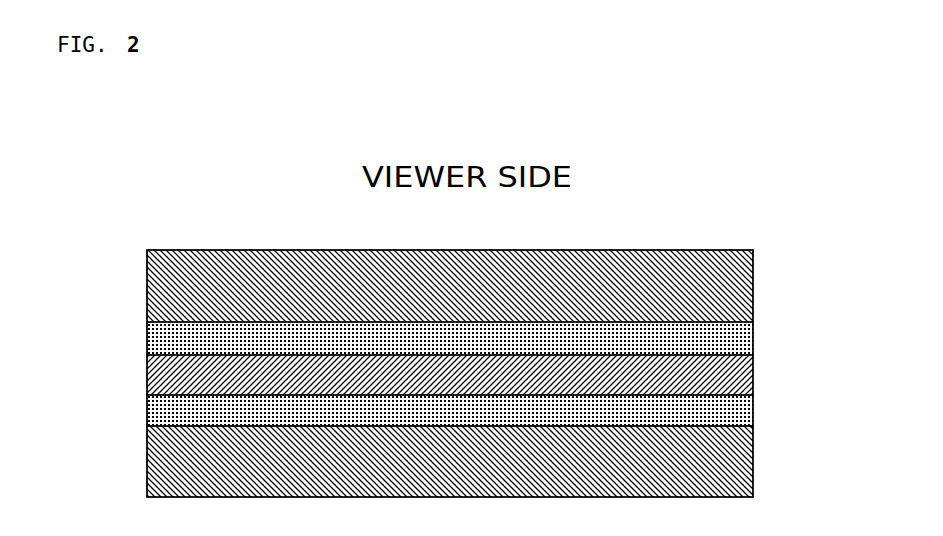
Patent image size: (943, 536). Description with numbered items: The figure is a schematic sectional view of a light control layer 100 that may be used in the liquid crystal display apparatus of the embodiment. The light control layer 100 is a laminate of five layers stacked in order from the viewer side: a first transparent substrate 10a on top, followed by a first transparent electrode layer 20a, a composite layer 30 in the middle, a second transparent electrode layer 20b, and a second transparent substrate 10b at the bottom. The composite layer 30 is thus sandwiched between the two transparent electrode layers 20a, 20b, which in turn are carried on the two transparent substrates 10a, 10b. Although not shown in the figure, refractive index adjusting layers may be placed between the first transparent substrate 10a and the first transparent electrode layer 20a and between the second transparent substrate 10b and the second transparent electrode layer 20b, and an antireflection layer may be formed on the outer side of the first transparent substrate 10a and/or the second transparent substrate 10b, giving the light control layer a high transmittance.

The light control layer 100 is at (812, 154).
The first transparent substrate 10a is at (754, 283).
The first transparent electrode layer 20a is at (754, 330).
The composite layer 30 is at (754, 375).
The second transparent electrode layer 20b is at (754, 407).
The second transparent substrate 10b is at (754, 468).